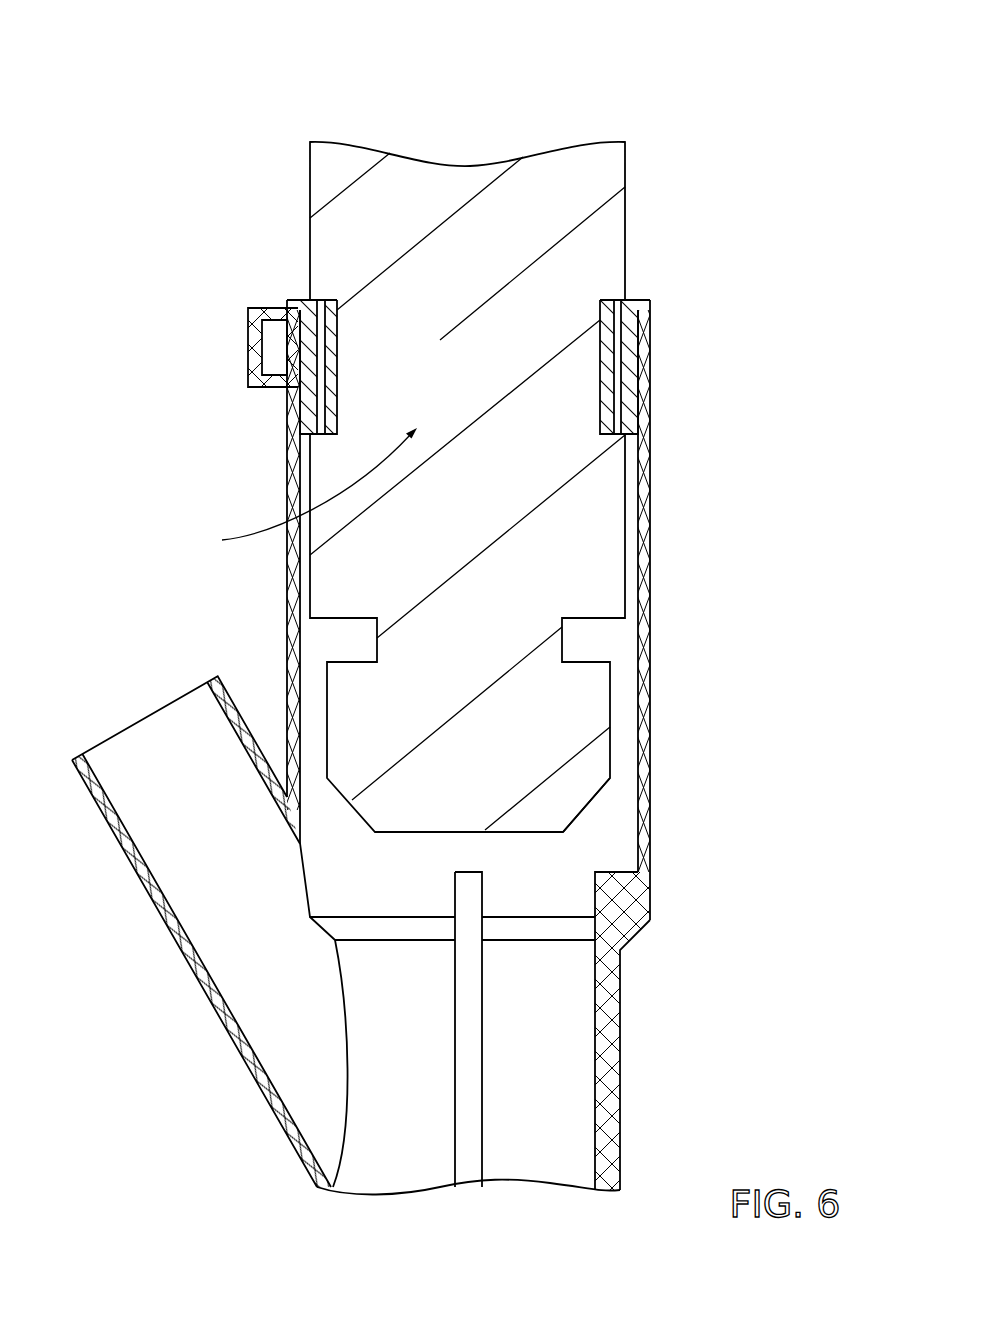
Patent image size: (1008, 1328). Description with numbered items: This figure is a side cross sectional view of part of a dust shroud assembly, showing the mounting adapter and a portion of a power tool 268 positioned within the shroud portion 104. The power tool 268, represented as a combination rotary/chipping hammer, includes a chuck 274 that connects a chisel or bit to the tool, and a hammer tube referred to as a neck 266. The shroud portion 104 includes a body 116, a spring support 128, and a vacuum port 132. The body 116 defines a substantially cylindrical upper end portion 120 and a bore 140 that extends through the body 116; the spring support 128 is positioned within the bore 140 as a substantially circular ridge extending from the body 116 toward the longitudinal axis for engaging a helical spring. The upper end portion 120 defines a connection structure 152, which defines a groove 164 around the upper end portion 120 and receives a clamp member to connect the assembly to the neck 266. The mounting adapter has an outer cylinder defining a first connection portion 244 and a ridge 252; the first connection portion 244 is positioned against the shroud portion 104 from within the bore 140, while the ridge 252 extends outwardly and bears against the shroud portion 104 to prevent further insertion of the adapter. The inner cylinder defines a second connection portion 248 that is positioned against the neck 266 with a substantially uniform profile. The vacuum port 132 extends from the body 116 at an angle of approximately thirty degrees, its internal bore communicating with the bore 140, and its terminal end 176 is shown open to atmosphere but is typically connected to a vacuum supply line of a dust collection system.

The power tool 268 is at (467, 233).
The chuck 274 is at (600, 790).
The neck 266 is at (337, 334).
The second connection portion 248 is at (600, 332).
The ridge 252 is at (297, 297).
The upper end portion 120 is at (652, 312).
The connection structure 152 is at (228, 346).
The first connection portion 244 is at (290, 402).
The groove 164 is at (652, 348).
The shroud portion 104 is at (652, 598).
The body 116 is at (650, 818).
The spring support 128 is at (542, 932).
The bore 140 is at (293, 490).
The terminal end 176 is at (178, 700).
The vacuum port 132 is at (143, 884).